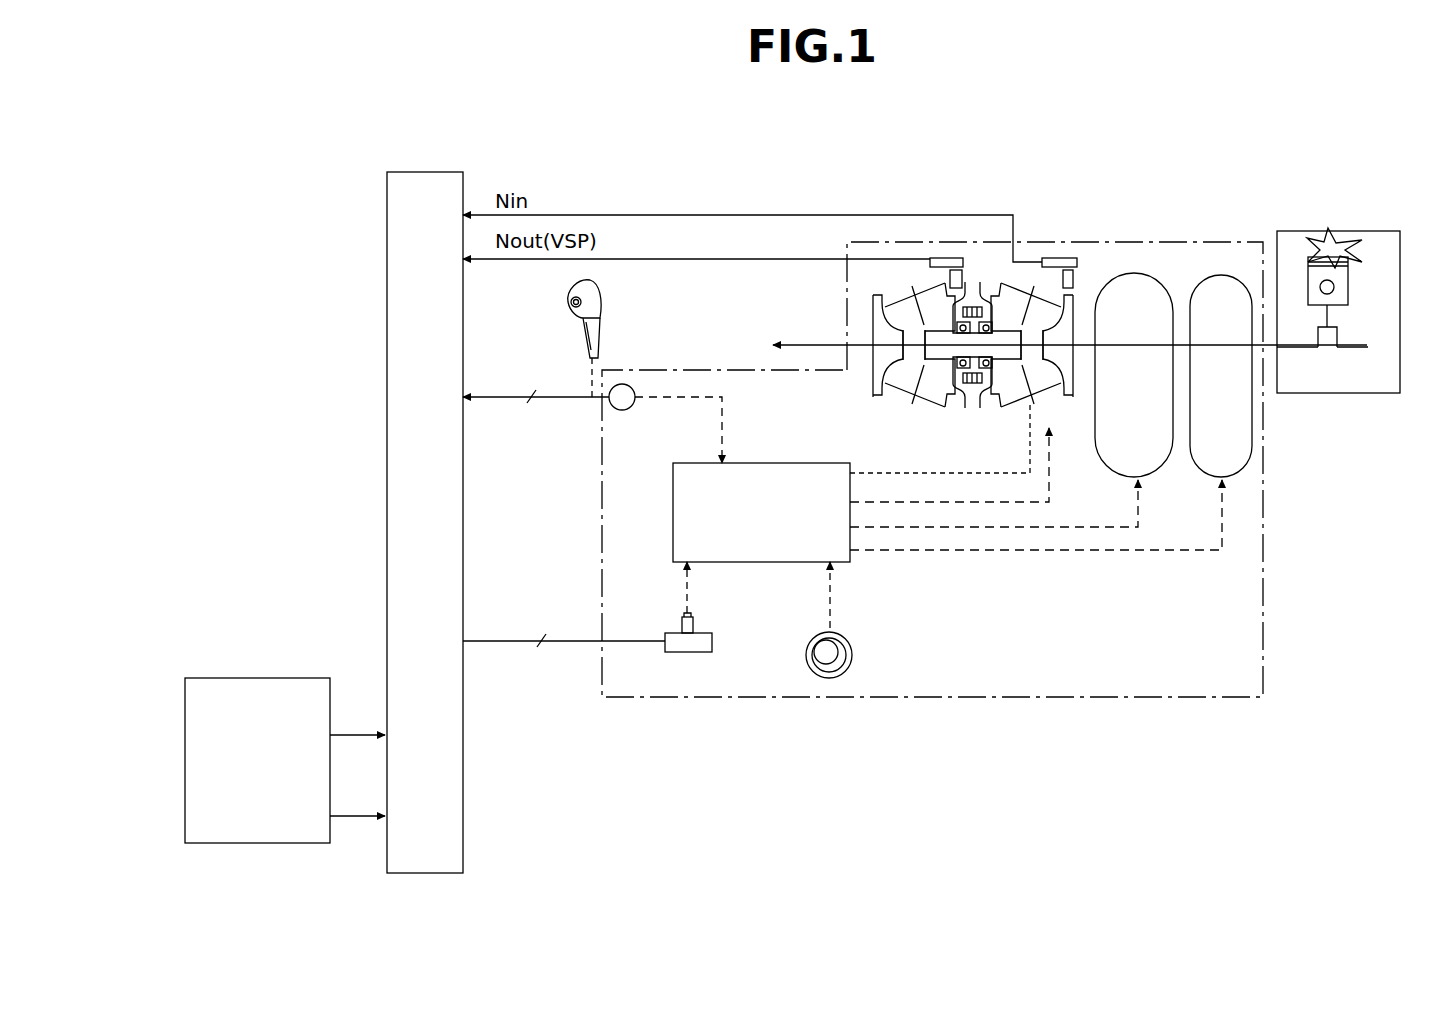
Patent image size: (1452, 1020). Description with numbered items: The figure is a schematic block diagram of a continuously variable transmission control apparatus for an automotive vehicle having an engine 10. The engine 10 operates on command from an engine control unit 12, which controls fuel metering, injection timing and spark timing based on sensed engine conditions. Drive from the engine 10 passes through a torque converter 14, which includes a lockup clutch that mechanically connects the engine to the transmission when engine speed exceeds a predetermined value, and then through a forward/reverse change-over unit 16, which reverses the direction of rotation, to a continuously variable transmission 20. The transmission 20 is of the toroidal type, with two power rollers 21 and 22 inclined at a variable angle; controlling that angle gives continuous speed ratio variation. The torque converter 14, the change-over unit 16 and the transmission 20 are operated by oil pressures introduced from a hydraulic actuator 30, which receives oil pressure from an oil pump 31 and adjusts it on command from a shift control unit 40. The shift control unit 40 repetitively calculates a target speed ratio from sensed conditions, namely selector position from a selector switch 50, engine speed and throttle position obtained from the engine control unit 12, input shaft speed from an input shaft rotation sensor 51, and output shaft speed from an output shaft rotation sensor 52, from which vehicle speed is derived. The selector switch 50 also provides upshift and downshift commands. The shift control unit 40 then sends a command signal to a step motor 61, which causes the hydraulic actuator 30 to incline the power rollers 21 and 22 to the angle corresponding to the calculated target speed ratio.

The engine 10 is at (1372, 231).
The engine control unit 12 is at (320, 678).
The torque converter 14 is at (1222, 275).
The forward/reverse (F/R) change-over unit 16 is at (1130, 273).
The continuously variable transmission 20 is at (992, 208).
The power roller 21 is at (900, 405).
The power roller 22 is at (1055, 412).
The hydraulic actuator 30 is at (852, 563).
The oil pump 31 is at (852, 655).
The shift control unit 40 is at (427, 172).
The selector switch 50 is at (600, 317).
The input shaft rotation sensor 51 is at (1060, 258).
The output shaft rotation sensor 52 is at (950, 258).
The step motor 61 is at (690, 652).